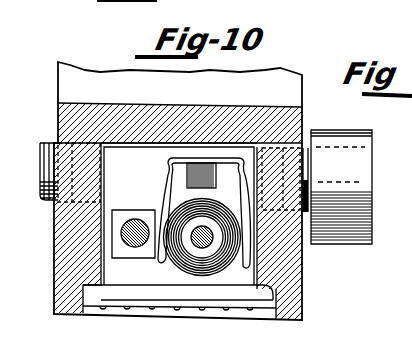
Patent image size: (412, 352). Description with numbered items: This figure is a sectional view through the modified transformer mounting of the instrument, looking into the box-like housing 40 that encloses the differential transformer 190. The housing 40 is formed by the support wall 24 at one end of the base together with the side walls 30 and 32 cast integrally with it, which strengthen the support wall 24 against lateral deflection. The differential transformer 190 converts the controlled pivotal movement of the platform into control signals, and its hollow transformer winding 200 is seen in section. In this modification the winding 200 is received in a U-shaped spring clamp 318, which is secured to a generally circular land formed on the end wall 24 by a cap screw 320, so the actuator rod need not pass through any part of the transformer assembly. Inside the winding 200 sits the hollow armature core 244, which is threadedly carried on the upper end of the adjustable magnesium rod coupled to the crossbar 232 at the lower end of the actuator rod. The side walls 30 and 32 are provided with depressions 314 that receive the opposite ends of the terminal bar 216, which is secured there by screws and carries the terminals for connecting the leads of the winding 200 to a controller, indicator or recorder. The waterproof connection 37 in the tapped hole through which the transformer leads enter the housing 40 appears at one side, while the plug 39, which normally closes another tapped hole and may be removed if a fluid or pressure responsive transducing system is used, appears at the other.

The support wall 24 is at (190, 116).
The side wall 30 is at (80, 236).
The side wall 32 is at (289, 248).
The water proof connection 37 is at (46, 148).
The plug 39 is at (366, 156).
The housing 40 is at (249, 176).
The differential transformer 190 is at (160, 202).
The transformer winding 200 is at (200, 270).
The terminal bar 216 is at (135, 289).
The crossbar 232 is at (187, 293).
The armature core 244 is at (198, 242).
The depressions 314 is at (87, 284).
The spring clamp 318 is at (168, 164).
The cap screw 320 is at (187, 178).